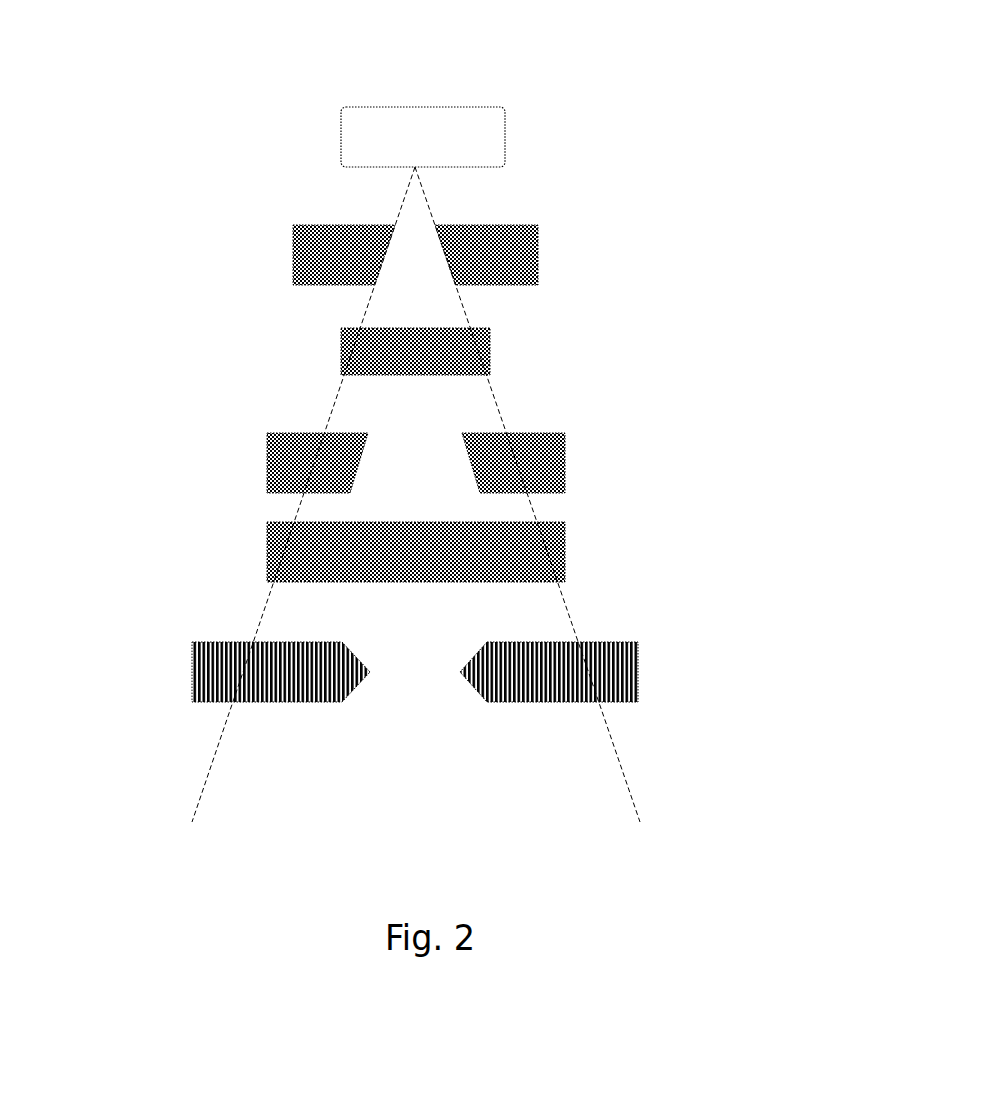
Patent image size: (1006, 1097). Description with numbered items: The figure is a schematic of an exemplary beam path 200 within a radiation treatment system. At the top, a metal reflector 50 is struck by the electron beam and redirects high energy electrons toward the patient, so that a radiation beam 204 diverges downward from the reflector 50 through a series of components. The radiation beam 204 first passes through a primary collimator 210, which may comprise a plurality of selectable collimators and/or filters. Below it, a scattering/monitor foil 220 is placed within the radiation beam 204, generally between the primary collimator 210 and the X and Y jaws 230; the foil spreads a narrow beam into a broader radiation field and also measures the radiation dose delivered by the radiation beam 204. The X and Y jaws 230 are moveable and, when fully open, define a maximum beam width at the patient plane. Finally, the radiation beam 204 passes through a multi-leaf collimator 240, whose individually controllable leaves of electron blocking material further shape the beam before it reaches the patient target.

The beam path 200 is at (445, 74).
The metal reflector 50 is at (489, 146).
The radiation beam 204 is at (430, 194).
The primary collimator 210 is at (519, 255).
The scattering/monitor foil 220 is at (478, 352).
The X and Y jaws 230 is at (554, 507).
The multi-leaf collimator 240 is at (645, 672).